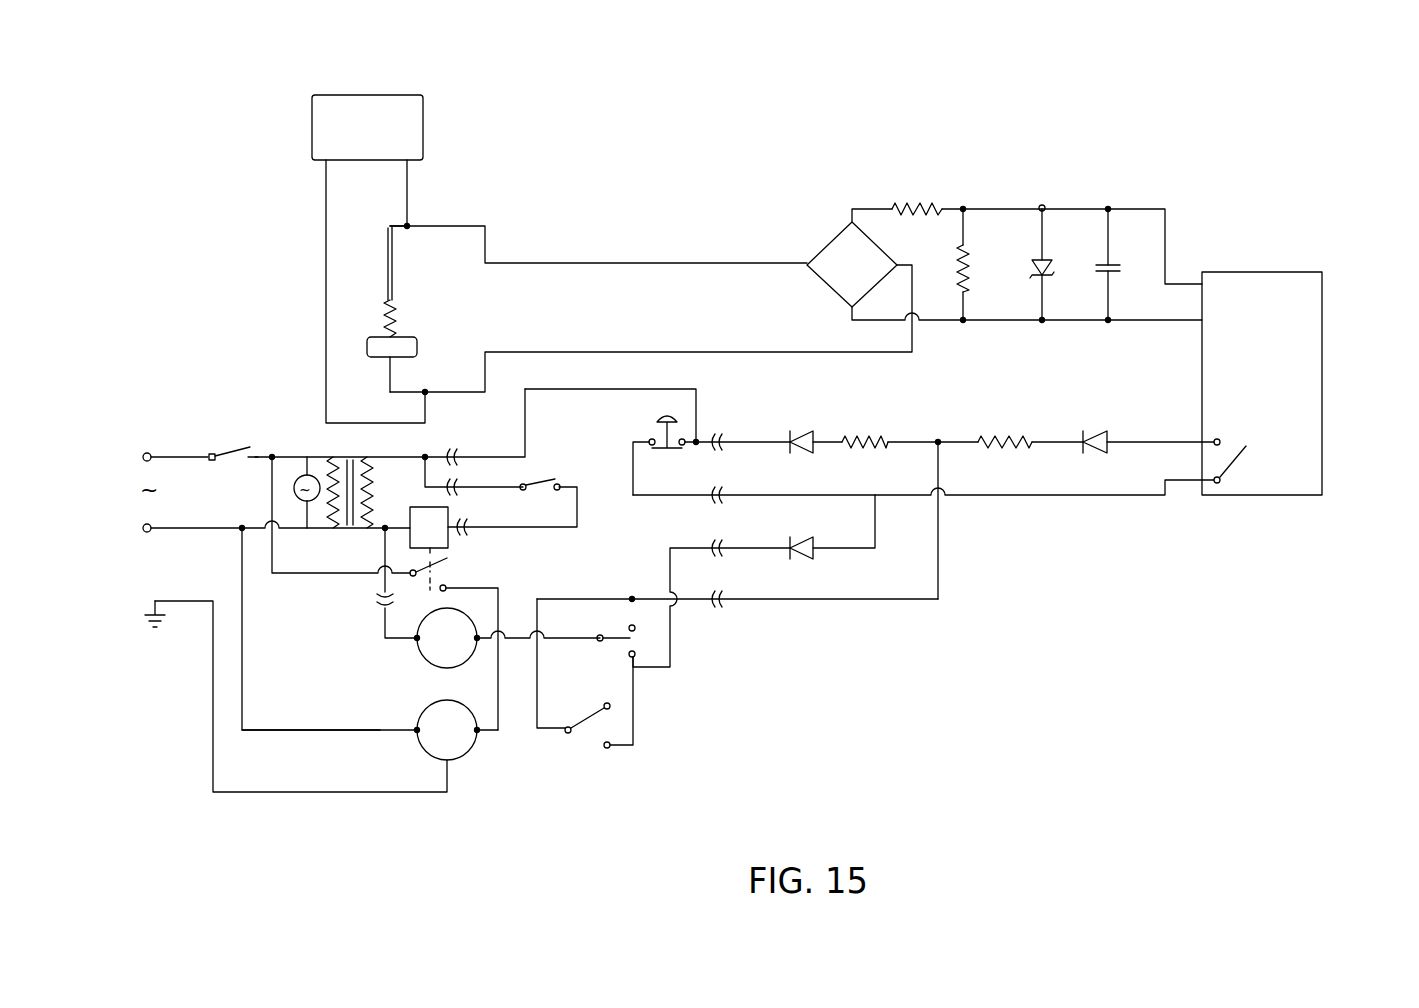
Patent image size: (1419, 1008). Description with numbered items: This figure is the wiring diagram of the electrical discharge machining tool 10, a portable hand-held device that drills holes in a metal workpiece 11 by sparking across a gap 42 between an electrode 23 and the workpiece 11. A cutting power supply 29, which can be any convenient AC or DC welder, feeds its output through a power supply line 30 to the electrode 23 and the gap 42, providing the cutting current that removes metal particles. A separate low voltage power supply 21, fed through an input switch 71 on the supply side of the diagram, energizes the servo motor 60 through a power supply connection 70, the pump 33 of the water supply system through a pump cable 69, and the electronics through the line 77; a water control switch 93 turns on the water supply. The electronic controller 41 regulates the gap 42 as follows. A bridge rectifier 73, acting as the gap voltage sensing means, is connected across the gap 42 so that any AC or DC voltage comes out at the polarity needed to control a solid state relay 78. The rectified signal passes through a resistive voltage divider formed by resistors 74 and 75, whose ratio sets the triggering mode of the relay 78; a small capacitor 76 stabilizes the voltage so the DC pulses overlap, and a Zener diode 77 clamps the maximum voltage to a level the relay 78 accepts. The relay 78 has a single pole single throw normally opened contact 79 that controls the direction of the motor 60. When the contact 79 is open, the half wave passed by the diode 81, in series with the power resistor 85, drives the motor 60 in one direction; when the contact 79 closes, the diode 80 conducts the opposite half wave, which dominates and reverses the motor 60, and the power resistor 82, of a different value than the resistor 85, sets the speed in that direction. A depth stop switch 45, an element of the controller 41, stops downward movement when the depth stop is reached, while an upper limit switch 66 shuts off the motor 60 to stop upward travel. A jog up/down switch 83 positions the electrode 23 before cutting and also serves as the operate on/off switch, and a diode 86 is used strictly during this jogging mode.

The electrical discharge machining tool 10 is at (764, 145).
The workpiece 11 is at (380, 359).
The power supply 21 is at (130, 463).
The electrode 23 is at (382, 249).
The power supply 29 is at (316, 112).
The power supply line 30 is at (413, 199).
The pump 33 is at (475, 752).
The electronic controller 41 is at (1027, 535).
The gap 42 is at (386, 315).
The depth stop switch 45 is at (696, 432).
The servo motor 60 is at (420, 668).
The upper limit switch 66 is at (583, 748).
The pump cable 69 is at (286, 722).
The power supply connection 70 is at (185, 538).
The power switch 71 is at (185, 450).
The bridge rectifier 73 is at (830, 241).
The resistor 74 is at (975, 261).
The resistor 75 is at (910, 204).
The capacitor 76 is at (1128, 263).
The Zener diode 77 is at (1055, 266).
The solid state relay 78 is at (1322, 336).
The normally opened contact 79 is at (1225, 452).
The diode 80 is at (1106, 460).
The diode 81 is at (813, 432).
The power resistor 82 is at (1011, 432).
The jog up/down switch 83 is at (607, 620).
The power resistor 85 is at (875, 436).
The diode 86 is at (816, 561).
The water control switch 93 is at (567, 470).